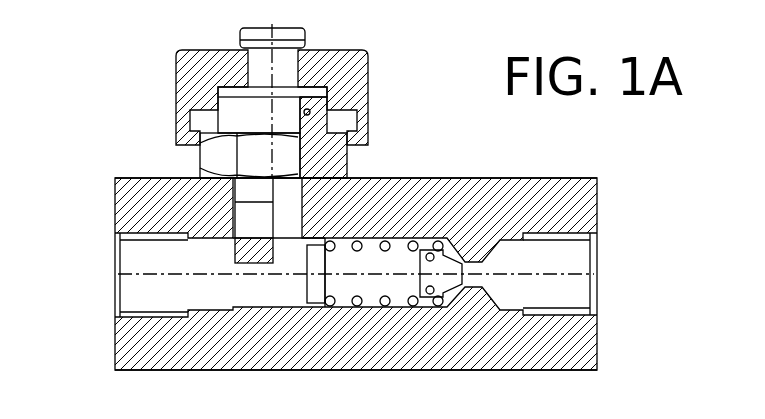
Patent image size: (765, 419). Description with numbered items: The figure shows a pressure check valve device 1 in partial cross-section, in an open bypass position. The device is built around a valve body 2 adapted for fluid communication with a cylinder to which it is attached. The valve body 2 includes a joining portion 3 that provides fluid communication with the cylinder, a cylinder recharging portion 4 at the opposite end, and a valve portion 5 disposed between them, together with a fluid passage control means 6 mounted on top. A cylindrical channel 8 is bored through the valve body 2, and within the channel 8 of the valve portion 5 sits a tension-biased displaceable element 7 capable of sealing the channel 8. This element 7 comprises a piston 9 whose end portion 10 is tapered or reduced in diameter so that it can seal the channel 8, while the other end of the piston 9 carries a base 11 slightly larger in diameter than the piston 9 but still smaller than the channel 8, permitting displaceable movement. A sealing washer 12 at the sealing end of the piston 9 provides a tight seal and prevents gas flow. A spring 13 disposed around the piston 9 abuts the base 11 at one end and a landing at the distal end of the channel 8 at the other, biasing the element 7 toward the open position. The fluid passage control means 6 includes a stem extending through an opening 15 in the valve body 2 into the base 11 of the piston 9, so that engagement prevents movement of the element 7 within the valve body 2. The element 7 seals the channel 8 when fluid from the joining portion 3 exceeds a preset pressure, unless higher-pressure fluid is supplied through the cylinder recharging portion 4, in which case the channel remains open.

The pressure check valve device 1 is at (115, 210).
The valve body 2 is at (380, 373).
The joining portion 3 is at (115, 343).
The cylinder recharging portion 4 is at (598, 228).
The valve portion 5 is at (405, 197).
The fluid passage control means 6 is at (371, 49).
The tension-biased displaceable element 7 is at (345, 303).
The cylindrical channel 8 is at (435, 237).
The piston 9 is at (412, 284).
The end portion 10 is at (448, 285).
The base 11 is at (267, 298).
The sealing washer 12 is at (435, 253).
The spring 13 is at (360, 237).
The opening 15 is at (247, 202).